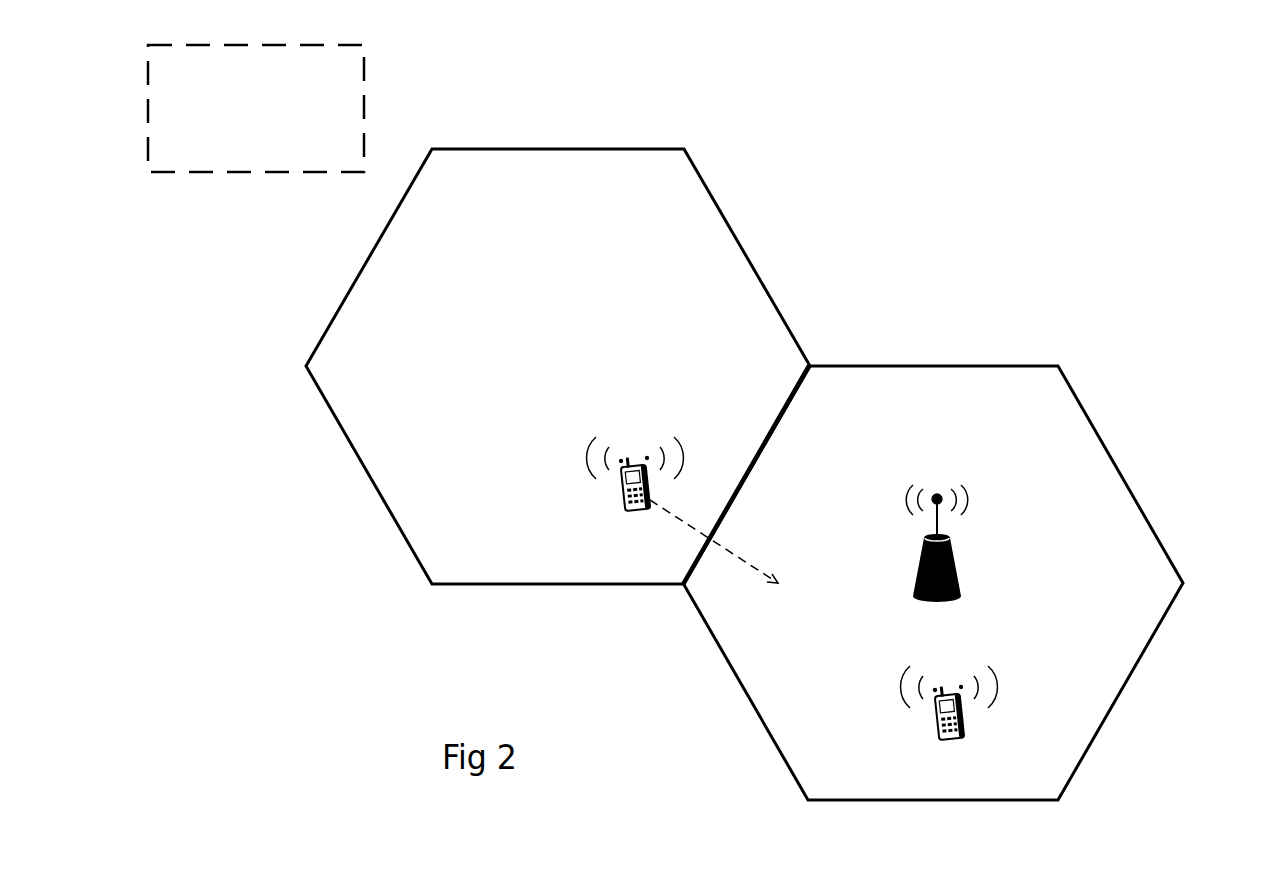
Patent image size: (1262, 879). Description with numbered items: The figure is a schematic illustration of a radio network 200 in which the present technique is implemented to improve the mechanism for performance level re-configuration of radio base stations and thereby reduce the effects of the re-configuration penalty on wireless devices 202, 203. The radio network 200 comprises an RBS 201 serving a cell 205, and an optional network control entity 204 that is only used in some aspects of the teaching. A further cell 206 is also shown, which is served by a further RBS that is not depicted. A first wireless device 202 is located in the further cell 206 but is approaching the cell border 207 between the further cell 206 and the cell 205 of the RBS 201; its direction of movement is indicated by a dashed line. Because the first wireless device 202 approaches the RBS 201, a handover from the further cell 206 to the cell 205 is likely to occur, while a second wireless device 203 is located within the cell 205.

The radio network 200 is at (1190, 116).
The RBS 201 is at (957, 594).
The first wireless device 202 is at (627, 506).
The wireless device 203 is at (938, 728).
The network control entity 204 is at (257, 173).
The cell 205 is at (1095, 396).
The further cell 206 is at (710, 165).
The cell border 207 is at (773, 430).